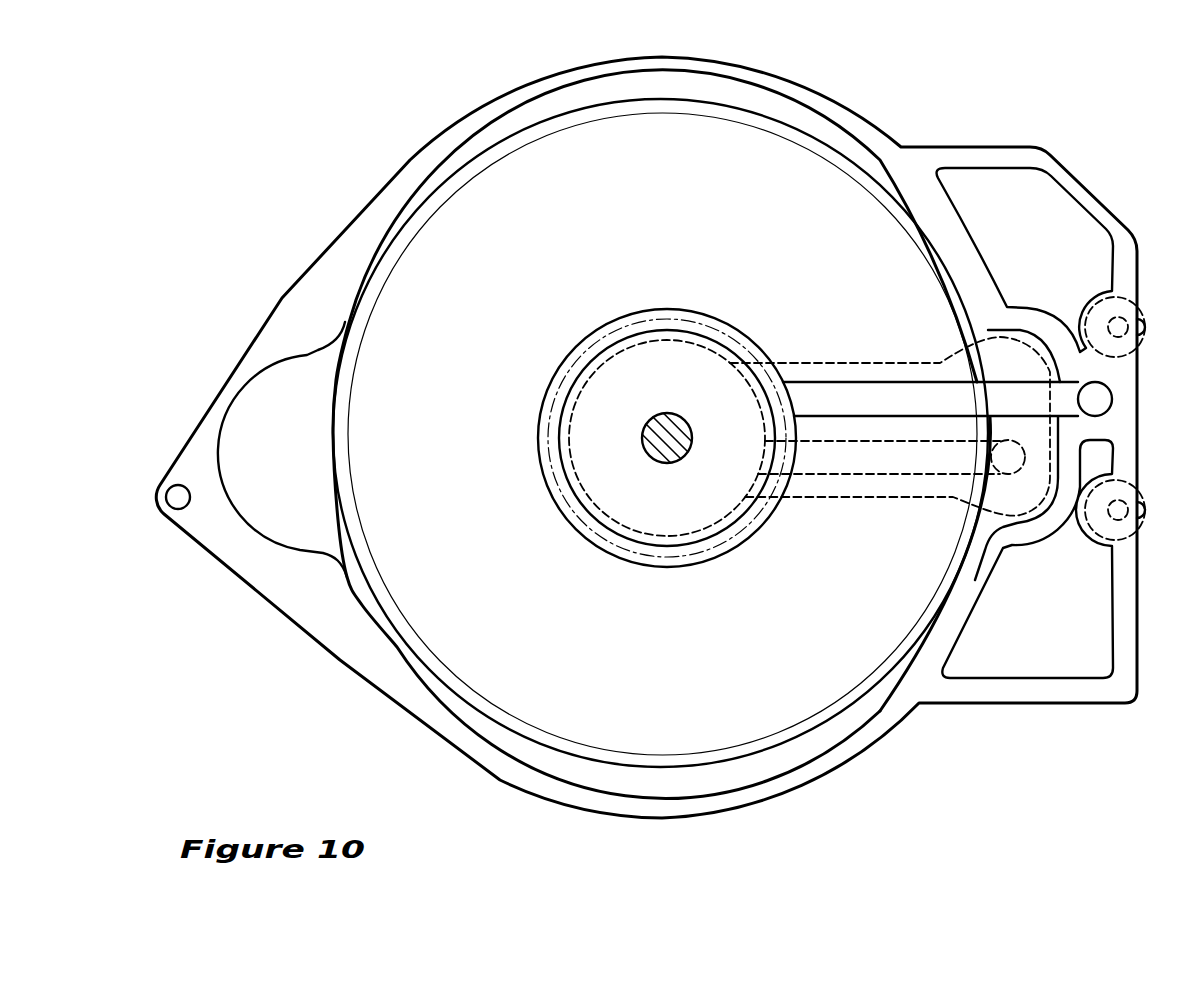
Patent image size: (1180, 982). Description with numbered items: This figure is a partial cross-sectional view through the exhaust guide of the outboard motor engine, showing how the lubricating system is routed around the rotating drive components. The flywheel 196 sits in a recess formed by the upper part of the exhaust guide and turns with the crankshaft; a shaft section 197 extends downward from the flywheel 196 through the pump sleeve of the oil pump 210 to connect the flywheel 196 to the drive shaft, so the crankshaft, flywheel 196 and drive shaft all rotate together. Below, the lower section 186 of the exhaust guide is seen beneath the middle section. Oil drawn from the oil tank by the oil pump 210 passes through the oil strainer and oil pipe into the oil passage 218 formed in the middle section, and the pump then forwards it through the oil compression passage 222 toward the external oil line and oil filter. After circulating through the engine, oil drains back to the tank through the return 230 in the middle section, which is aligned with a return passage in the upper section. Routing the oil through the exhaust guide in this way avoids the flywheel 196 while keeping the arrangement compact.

The lower section 186 is at (922, 755).
The flywheel 196 is at (748, 743).
The shaft section 197 is at (678, 463).
The oil pump 210 is at (612, 520).
The oil passage 218 is at (858, 455).
The oil compression passage 222 is at (838, 392).
The return 230 is at (1062, 213).